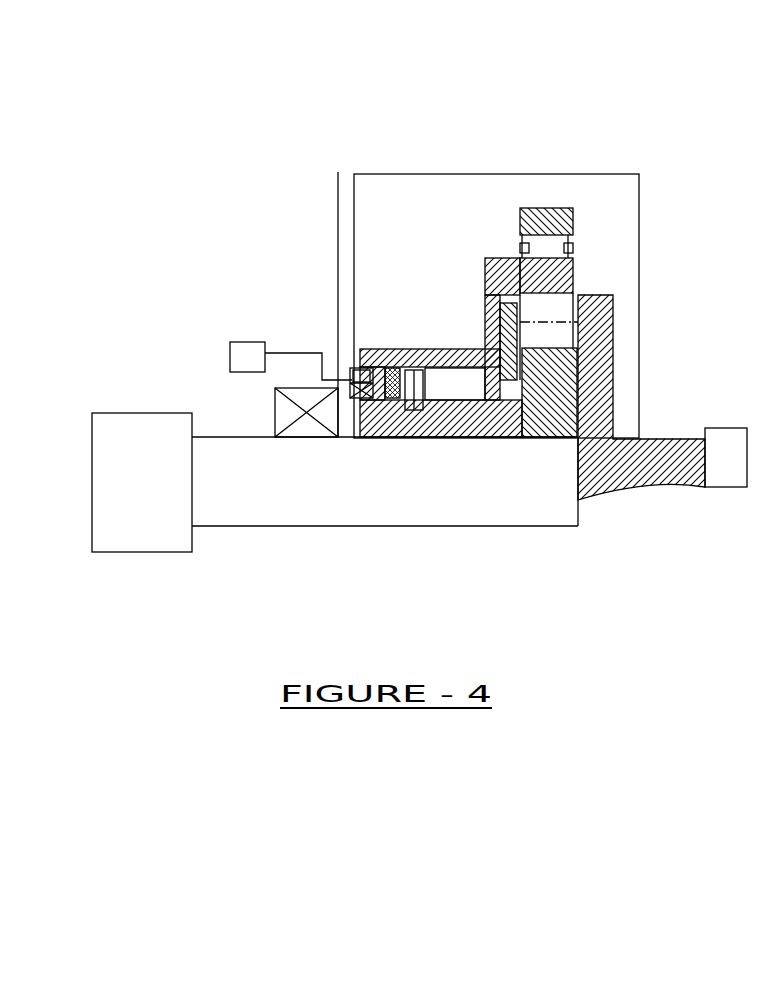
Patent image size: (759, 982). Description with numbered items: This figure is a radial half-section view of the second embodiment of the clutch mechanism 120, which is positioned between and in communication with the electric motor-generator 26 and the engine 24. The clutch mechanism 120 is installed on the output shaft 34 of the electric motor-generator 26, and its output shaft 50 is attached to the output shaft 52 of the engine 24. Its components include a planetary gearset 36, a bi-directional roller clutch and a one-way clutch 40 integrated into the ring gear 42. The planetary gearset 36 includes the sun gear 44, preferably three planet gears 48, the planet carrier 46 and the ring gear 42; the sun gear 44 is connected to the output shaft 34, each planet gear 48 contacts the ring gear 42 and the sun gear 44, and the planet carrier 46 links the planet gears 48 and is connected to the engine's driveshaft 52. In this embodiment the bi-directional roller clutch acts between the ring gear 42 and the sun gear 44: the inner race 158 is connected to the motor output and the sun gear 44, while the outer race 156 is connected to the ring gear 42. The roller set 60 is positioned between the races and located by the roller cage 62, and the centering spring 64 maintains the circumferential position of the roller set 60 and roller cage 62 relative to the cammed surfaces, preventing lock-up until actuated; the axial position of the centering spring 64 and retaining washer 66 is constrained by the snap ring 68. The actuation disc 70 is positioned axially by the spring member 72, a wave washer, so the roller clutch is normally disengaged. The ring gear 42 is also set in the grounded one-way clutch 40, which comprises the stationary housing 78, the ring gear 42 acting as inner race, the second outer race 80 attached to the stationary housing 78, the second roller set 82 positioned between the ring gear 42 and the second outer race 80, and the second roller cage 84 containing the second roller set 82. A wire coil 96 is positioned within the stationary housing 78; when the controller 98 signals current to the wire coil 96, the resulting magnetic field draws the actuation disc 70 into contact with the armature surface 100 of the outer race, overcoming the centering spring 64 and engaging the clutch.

The clutch mechanism 120 is at (316, 112).
The stationary housing 78 is at (383, 227).
The electric motor-generator 26 is at (135, 425).
The engine 24 is at (720, 465).
The controller 98 is at (245, 350).
The armature surface 100 is at (277, 407).
The output shaft 52 is at (683, 439).
The sun gear 44 is at (598, 372).
The output shaft 50 is at (598, 398).
The output shaft 34 is at (580, 500).
The actuation disc 70 is at (385, 437).
The planet gears 48 is at (497, 297).
The roller cage 62 is at (548, 437).
The ring gear 42 is at (572, 273).
The second outer race 80 is at (550, 208).
The second roller set 82 is at (545, 240).
The second roller cage 84 is at (568, 248).
The one-way clutch 40 is at (505, 220).
The planetary gearset 36 is at (590, 250).
The planet carrier 46 is at (590, 297).
The outer race 156 is at (428, 349).
The spring member 72 is at (345, 440).
The wire coil 96 is at (365, 345).
The centering spring 64 is at (413, 372).
The snap ring 68 is at (417, 437).
The retaining washer 66 is at (408, 437).
The roller set 60 is at (450, 388).
The inner race 158 is at (497, 437).